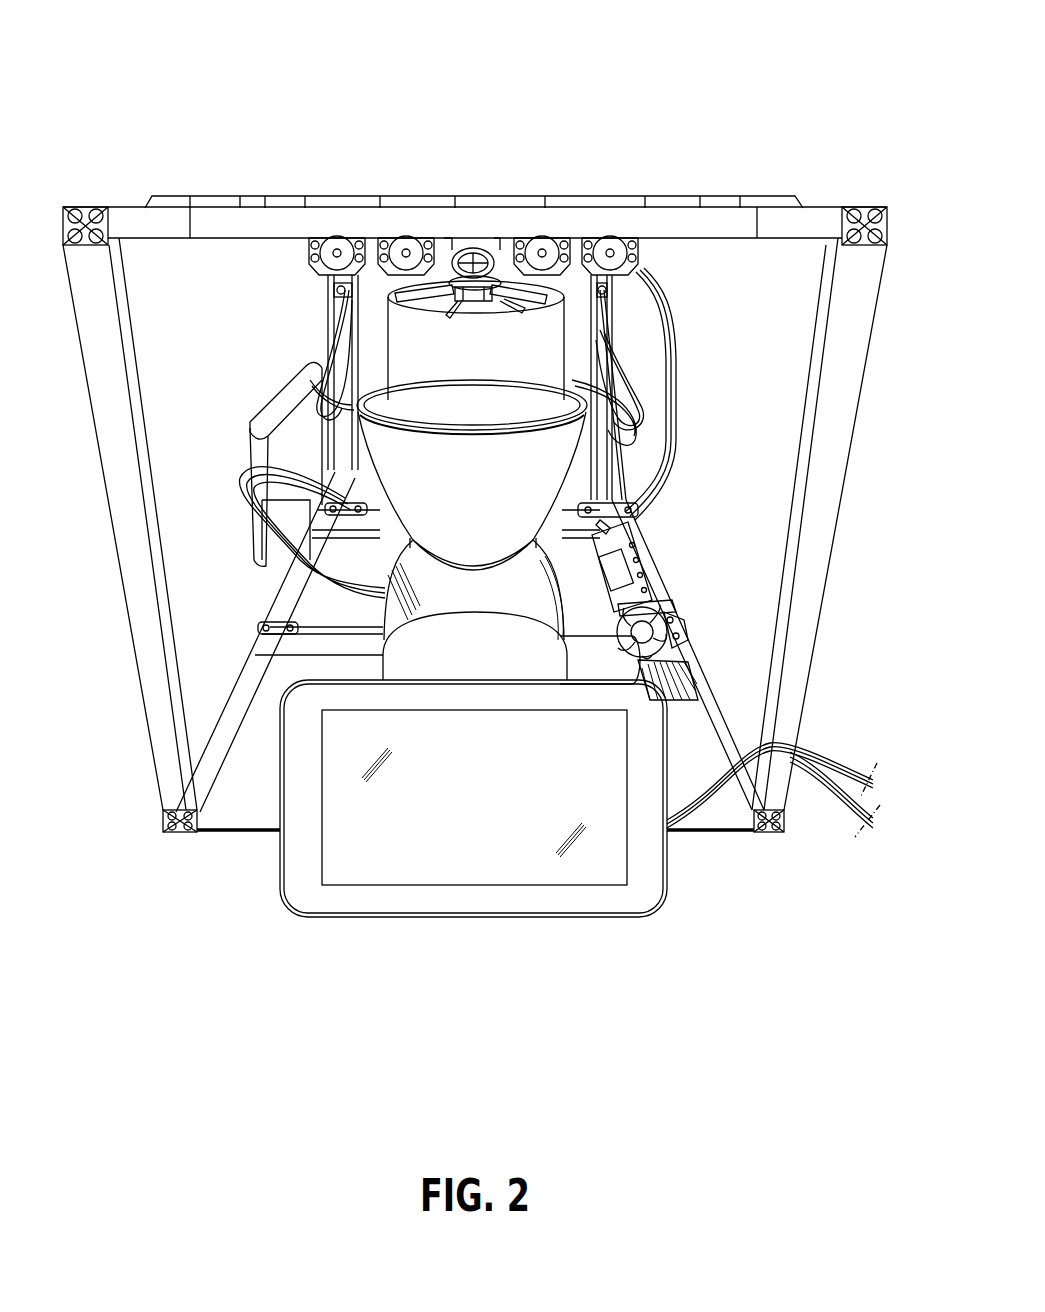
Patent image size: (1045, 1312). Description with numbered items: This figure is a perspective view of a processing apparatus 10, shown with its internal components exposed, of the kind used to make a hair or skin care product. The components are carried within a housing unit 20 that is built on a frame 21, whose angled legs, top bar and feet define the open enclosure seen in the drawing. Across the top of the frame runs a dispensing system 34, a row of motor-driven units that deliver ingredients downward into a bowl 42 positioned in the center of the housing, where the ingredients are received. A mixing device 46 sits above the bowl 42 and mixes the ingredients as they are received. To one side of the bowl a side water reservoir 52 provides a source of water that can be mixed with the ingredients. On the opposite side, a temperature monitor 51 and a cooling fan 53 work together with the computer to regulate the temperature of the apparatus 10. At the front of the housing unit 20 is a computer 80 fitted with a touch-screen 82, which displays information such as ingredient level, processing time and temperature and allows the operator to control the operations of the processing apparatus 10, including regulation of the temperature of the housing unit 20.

The processing apparatus 10 is at (866, 95).
The housing unit 20 is at (850, 442).
The frame 21 is at (100, 465).
The dispensing system 34 is at (640, 262).
The bowl 42 is at (380, 625).
The mixing device 46 is at (392, 290).
The temperature monitor 51 is at (640, 520).
The side water reservoir 52 is at (280, 405).
The cooling fan 53 is at (665, 615).
The computer 80 is at (643, 918).
The touch-screen 82 is at (343, 890).